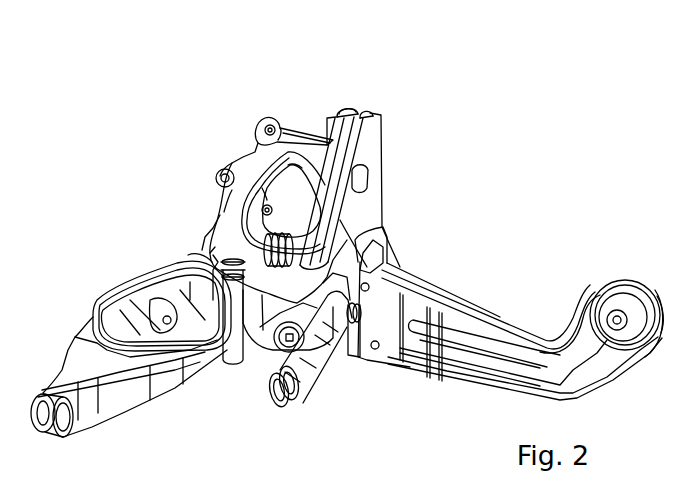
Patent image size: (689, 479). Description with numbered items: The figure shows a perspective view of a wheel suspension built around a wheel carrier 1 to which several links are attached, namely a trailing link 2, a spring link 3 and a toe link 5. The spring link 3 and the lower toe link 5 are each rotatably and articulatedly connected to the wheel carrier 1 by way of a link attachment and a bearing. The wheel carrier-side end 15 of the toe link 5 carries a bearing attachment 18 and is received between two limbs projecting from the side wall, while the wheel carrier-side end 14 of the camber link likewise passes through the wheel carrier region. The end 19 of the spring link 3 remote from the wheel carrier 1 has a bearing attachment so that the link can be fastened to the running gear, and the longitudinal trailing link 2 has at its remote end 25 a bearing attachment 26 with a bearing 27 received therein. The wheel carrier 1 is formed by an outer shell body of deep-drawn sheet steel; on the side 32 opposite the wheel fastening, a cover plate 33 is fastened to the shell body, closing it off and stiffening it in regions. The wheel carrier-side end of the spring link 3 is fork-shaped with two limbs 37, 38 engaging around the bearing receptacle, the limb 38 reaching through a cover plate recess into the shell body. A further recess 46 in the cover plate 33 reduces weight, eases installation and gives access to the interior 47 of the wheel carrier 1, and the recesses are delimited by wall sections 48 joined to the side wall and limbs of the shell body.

The wheel carrier 1 is at (190, 68).
The end of spring link remote from wheel carrier 19 is at (352, 4).
The trailing link 2 is at (477, 298).
The spring link 3 is at (150, 402).
The toe link 5 is at (322, 387).
The wheel carrier-side end of camber link 14 is at (361, 98).
The wheel carrier-side end of toe link 15 is at (362, 300).
The bearing attachment 18 is at (348, 337).
The end of trailing link remote from wheel carrier 25 is at (595, 265).
The bearing attachment 26 is at (657, 333).
The bearing 27 is at (635, 293).
The side of shell body opposite wheel fastening 32 is at (203, 212).
The cover plate 33 is at (230, 193).
The limb 37 is at (187, 257).
The limb 38 is at (234, 365).
The recess 46 is at (295, 167).
The interior of wheel carrier 47 is at (265, 192).
The wall sections 48 is at (207, 252).